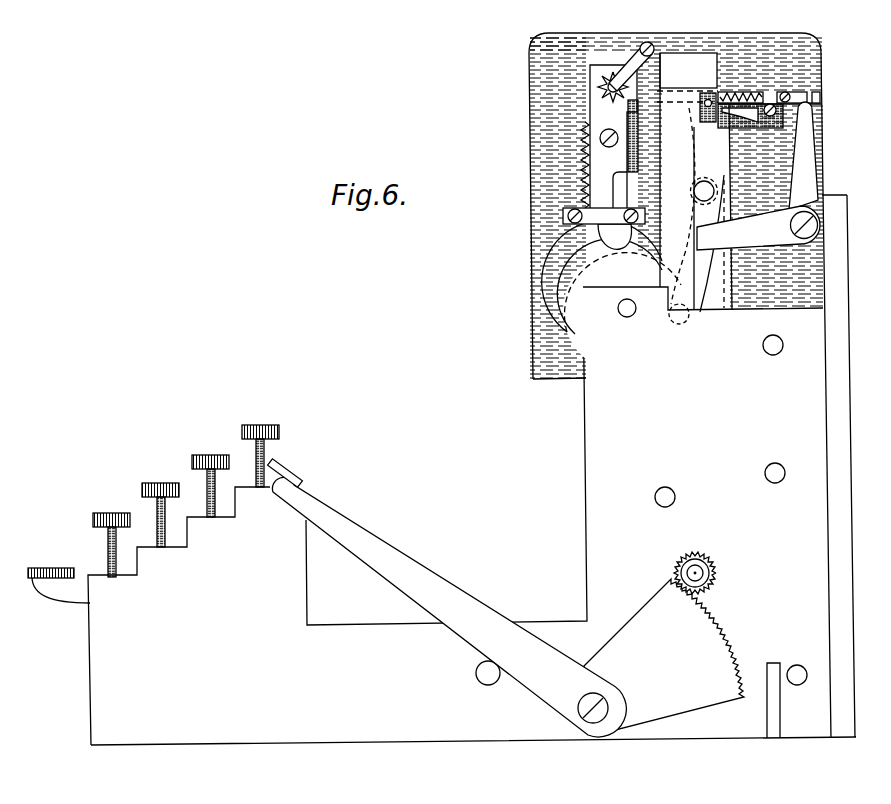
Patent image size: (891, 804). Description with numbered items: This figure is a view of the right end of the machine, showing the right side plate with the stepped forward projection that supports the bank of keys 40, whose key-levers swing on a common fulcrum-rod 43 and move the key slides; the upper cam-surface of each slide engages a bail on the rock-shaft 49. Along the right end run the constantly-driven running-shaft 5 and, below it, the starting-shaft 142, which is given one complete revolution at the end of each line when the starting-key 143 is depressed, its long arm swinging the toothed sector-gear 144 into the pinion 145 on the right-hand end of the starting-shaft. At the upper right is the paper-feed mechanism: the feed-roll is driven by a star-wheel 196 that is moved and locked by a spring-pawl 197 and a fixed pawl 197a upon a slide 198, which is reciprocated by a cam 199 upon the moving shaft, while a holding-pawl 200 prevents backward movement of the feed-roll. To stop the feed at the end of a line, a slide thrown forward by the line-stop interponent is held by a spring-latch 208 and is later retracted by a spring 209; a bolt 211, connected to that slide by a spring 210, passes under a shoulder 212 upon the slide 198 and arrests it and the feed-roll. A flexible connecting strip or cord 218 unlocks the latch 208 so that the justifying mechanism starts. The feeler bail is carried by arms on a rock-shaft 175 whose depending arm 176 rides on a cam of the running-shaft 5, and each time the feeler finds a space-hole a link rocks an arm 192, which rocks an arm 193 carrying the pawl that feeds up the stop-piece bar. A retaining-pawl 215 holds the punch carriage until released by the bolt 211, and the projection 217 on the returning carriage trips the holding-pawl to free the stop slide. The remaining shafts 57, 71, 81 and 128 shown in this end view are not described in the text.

The running-shaft 5 is at (628, 317).
The keys 40 is at (157, 483).
The fulcrum-rod 43 is at (487, 672).
The rock-shaft 49 is at (768, 352).
The shaft 57 is at (792, 470).
The shaft 71 is at (795, 672).
The lever 81 is at (57, 568).
The shaft 128 is at (672, 492).
The starting-shaft 142 is at (712, 580).
The starting-key 143 is at (287, 472).
The sector-gear 144 is at (664, 656).
The pinion 145 is at (712, 562).
The rock-shaft 175 is at (722, 200).
The depending arm 176 is at (718, 283).
The arm 192 is at (806, 160).
The arm 193 is at (725, 230).
The star-wheel 196 is at (598, 88).
The spring-pawl 197 is at (704, 121).
The fixed pawl 197a is at (590, 95).
The slide 198 is at (583, 184).
The cam 199 is at (593, 262).
The holding-pawl 200 is at (630, 67).
The spring-latch 208 is at (759, 110).
The spring 209 is at (784, 93).
The spring 210 is at (750, 92).
The bolt 211 is at (687, 86).
The shoulder 212 is at (652, 95).
The retaining-pawl 215 is at (700, 130).
The projection 217 is at (810, 103).
The flexible connecting strip or cord 218 is at (726, 182).